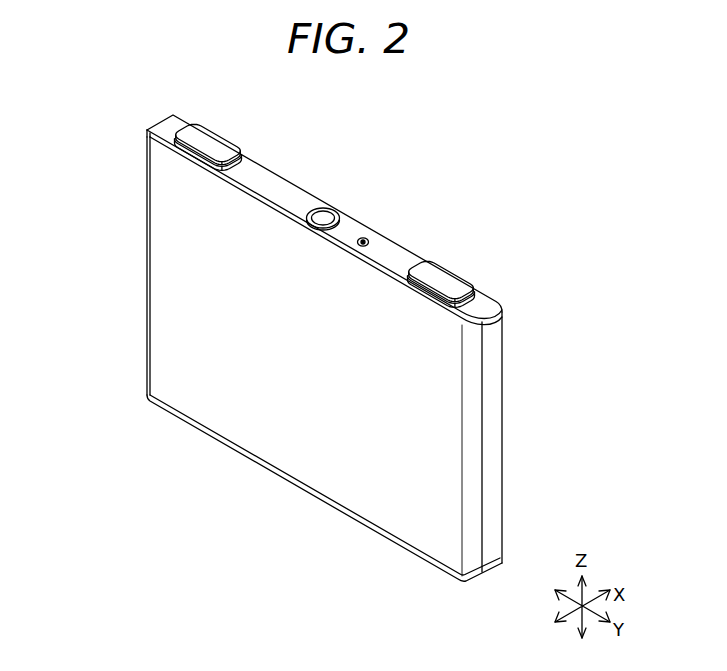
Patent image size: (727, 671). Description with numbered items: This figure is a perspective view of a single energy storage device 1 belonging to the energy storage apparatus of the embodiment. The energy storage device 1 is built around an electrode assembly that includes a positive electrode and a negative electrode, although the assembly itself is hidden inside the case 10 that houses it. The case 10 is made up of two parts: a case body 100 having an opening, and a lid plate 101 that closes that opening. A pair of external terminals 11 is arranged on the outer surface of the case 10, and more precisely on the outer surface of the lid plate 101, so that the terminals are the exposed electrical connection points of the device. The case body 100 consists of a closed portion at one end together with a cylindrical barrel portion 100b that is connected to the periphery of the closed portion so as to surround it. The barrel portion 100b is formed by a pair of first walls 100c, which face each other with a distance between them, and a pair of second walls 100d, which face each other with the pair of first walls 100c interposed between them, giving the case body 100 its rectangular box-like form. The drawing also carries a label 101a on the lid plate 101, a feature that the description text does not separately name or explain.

The energy storage device 1 is at (123, 129).
The case 10 is at (642, 318).
The external terminals 11 is at (208, 138).
The case body 100 is at (507, 407).
The barrel portion 100b is at (623, 473).
The first walls 100c is at (413, 473).
The second walls 100d is at (493, 482).
The lid plate 101 is at (483, 305).
The gas release valve 101a is at (323, 216).